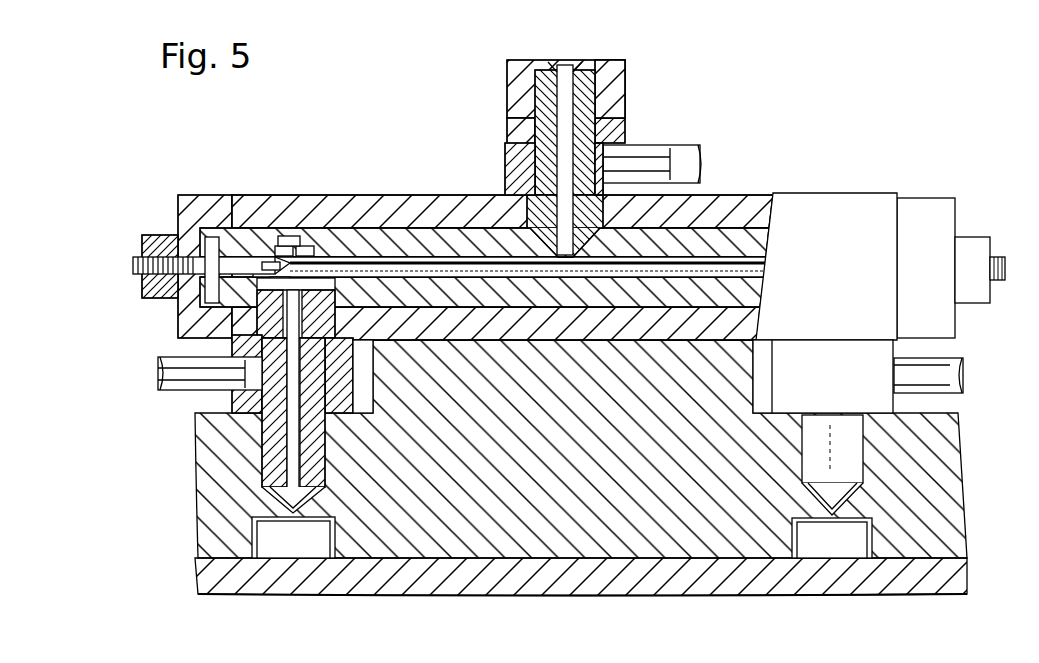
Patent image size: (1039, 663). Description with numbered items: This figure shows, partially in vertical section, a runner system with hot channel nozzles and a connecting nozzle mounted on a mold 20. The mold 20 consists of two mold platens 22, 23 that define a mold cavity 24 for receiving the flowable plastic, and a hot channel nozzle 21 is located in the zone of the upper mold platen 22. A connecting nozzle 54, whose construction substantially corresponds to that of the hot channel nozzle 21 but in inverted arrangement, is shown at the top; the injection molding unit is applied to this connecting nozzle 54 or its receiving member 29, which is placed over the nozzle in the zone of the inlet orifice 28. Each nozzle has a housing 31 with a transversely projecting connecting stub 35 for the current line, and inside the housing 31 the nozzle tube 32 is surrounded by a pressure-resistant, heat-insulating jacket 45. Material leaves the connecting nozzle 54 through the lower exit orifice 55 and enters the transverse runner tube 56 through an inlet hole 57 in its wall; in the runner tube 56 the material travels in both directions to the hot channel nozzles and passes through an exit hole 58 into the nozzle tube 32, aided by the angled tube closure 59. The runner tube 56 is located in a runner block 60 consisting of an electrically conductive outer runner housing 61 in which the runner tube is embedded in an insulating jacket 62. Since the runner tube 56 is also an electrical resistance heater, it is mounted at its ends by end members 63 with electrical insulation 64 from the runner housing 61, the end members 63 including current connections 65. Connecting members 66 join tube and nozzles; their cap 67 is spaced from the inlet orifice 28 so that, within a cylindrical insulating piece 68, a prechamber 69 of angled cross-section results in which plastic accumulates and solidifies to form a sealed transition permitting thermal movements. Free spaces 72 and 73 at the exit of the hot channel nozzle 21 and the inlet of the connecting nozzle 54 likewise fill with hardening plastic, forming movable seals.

The mold 20 is at (571, 483).
The hot channel nozzle 21 is at (252, 443).
The mold platen 22 is at (217, 540).
The mold platen 23 is at (218, 583).
The mold cavity 24 is at (262, 517).
The inlet orifice 28 is at (558, 70).
The receiving member 29 is at (522, 75).
The housing 31 is at (255, 408).
The nozzle tube 32 is at (608, 123).
The connecting stub 35 is at (165, 375).
The insulating jacket 45 is at (277, 447).
The connecting nozzle 54 is at (561, 138).
The exit orifice 55 is at (503, 143).
The transverse runner tube 56 is at (363, 257).
The inlet hole 57 is at (632, 185).
The exit hole 58 is at (287, 240).
The tube closure 59 is at (280, 287).
The runner block 60 is at (800, 188).
The runner housing 61 is at (342, 205).
The insulating jacket 62 is at (705, 240).
The end member 63 is at (150, 215).
The electrical insulation 64 is at (205, 250).
The current connection 65 is at (135, 258).
The connecting member 66 is at (280, 252).
The cap 67 is at (273, 273).
The insulating piece 68 is at (527, 233).
The prechamber 69 is at (282, 270).
The free space 72 is at (283, 490).
The free space 73 is at (582, 70).